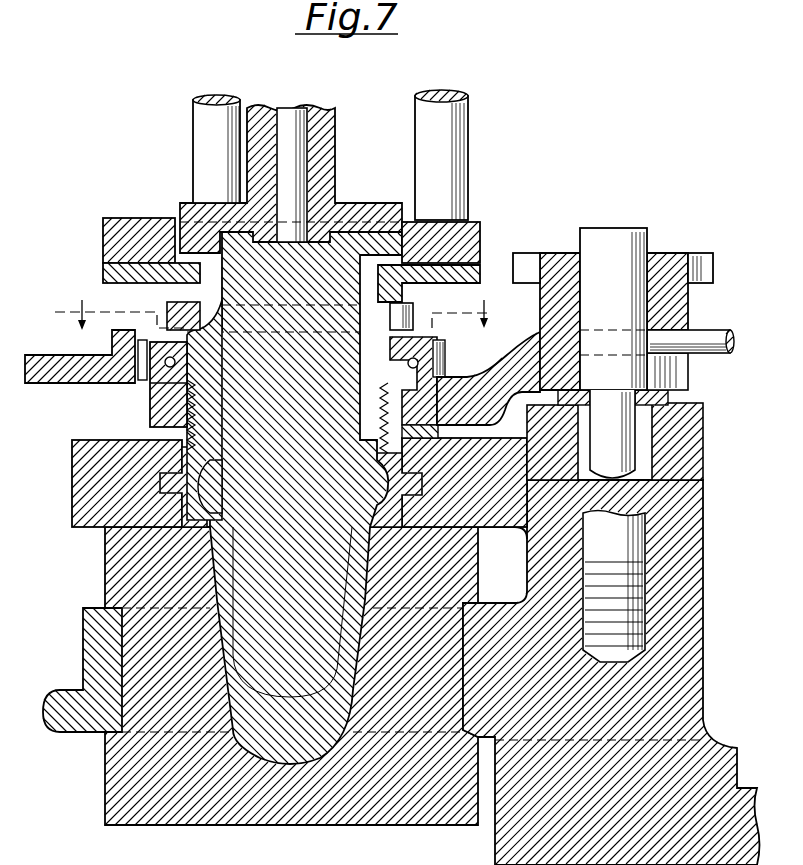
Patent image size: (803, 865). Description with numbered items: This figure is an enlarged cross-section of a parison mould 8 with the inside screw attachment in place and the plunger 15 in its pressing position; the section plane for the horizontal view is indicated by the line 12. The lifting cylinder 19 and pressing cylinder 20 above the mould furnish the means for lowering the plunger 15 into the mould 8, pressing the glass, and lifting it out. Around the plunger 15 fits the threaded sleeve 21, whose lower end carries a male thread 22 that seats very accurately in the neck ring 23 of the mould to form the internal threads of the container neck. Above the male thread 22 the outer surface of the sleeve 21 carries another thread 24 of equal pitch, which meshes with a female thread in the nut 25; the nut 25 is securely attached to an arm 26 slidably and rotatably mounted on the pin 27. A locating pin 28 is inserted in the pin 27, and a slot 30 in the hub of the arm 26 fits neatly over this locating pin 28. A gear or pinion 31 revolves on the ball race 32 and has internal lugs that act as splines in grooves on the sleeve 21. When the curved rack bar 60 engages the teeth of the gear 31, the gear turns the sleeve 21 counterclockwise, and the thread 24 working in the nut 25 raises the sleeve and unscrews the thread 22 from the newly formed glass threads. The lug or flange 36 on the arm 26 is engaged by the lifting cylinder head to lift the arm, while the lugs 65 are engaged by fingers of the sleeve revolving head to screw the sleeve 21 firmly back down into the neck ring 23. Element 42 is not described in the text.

The mould 8 is at (100, 568).
The section line 12 is at (272, 309).
The plunger 15 is at (294, 498).
The lifting cylinder 19 is at (337, 120).
The pressing cylinder 20 is at (316, 203).
The threaded sleeve 21 is at (167, 305).
The male thread 22 is at (213, 490).
The neck ring 23 is at (150, 453).
The thread 24 is at (182, 407).
The nut 25 is at (152, 417).
The arm 26 is at (520, 343).
The pin 27 is at (607, 230).
The locating pin 28 is at (710, 340).
The slot 30 is at (675, 372).
The gear 31 is at (403, 340).
The ball race 32 is at (413, 362).
The lug 36 is at (522, 268).
The pin 42 is at (702, 263).
The curved rack bar 60 is at (53, 360).
The lug 65 is at (397, 308).